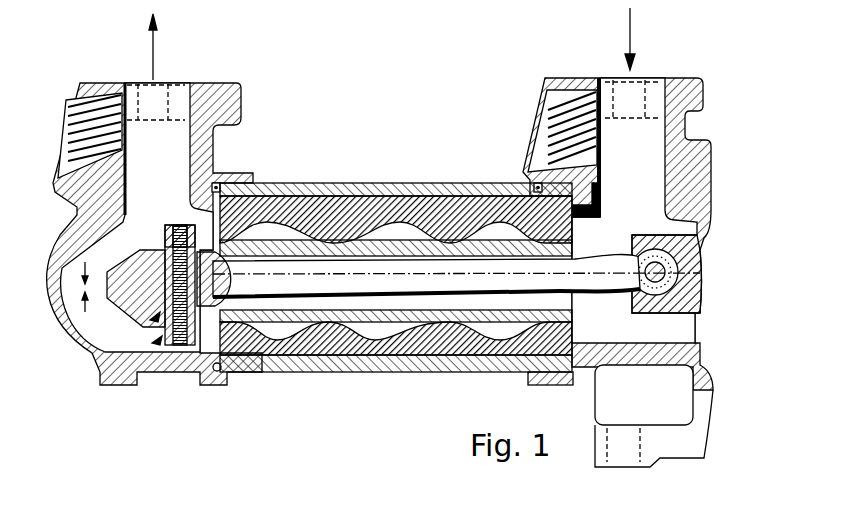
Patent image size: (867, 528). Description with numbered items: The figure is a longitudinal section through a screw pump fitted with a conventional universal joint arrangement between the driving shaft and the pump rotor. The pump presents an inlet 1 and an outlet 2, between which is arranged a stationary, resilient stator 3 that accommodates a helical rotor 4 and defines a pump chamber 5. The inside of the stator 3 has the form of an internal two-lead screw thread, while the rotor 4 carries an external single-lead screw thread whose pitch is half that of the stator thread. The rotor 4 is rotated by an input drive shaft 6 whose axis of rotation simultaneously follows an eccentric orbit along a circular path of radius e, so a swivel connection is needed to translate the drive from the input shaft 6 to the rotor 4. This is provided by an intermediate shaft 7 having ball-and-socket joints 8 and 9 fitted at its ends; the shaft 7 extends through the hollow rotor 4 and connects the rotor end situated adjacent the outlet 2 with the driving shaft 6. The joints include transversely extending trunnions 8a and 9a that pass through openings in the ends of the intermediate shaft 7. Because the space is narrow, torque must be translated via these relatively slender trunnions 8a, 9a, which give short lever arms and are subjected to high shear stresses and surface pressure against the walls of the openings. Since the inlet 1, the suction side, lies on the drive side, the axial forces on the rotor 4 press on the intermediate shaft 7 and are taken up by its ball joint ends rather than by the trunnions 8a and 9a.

The inlet 1 is at (645, 140).
The outlet 2 is at (173, 167).
The stator 3 is at (402, 180).
The helical rotor 4 is at (382, 362).
The pump chamber 5 is at (270, 225).
The input drive shaft 6 is at (695, 293).
The intermediate shaft 7 is at (350, 300).
The ball-and-socket joint 8 is at (638, 290).
The trunnion 8a is at (650, 270).
The ball-and-socket joint 9 is at (112, 362).
The trunnion 9a is at (181, 226).